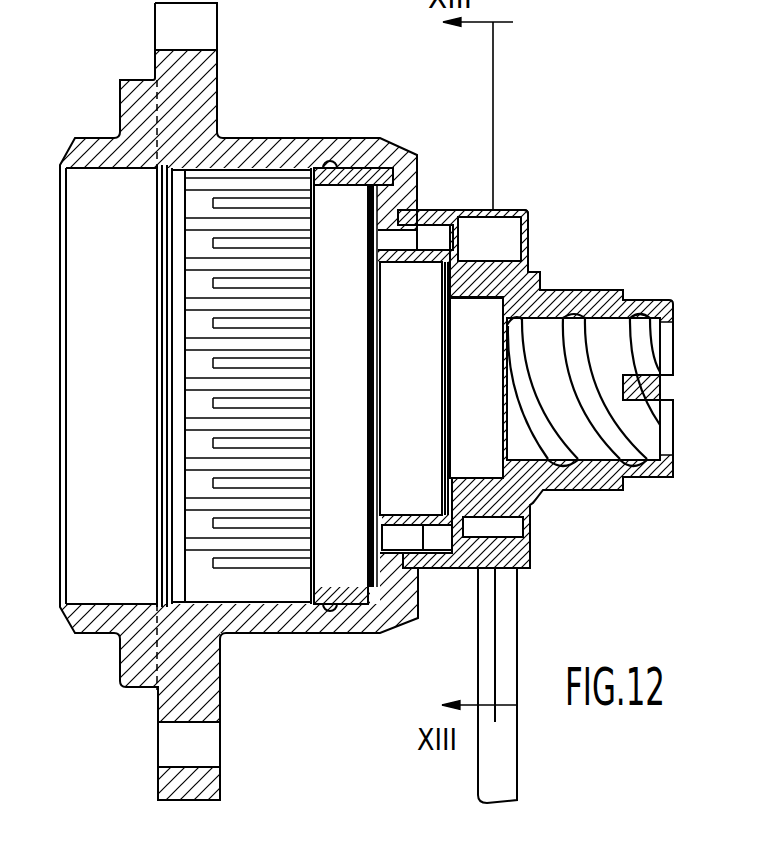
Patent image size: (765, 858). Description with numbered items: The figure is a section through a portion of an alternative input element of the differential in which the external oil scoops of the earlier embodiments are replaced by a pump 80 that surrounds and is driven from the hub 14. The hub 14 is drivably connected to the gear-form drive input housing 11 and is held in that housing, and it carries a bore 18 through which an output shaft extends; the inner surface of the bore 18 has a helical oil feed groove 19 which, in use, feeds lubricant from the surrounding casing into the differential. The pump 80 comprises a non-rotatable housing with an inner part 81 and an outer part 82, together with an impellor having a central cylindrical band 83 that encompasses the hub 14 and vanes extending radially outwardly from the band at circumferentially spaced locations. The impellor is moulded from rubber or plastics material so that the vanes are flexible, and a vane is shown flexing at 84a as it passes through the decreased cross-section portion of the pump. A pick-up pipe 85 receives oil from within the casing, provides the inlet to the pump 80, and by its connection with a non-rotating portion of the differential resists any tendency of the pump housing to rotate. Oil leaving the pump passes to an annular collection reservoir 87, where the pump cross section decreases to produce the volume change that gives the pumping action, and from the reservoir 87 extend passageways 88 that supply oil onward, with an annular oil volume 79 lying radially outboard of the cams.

The drive input housing 11 is at (260, 150).
The hub 14 is at (599, 485).
The bore 18 is at (612, 455).
The helical oil feed groove 19 is at (662, 356).
The annular oil volume 79 is at (342, 192).
The pump 80 is at (488, 240).
The inner part 81 is at (444, 560).
The outer part 82 is at (527, 246).
The central cylindrical band 83 is at (505, 519).
The flexed pump vane 84a is at (483, 530).
The pick-up pipe 85 is at (490, 672).
The annular collection reservoir 87 is at (438, 237).
The passageways 88 is at (400, 248).